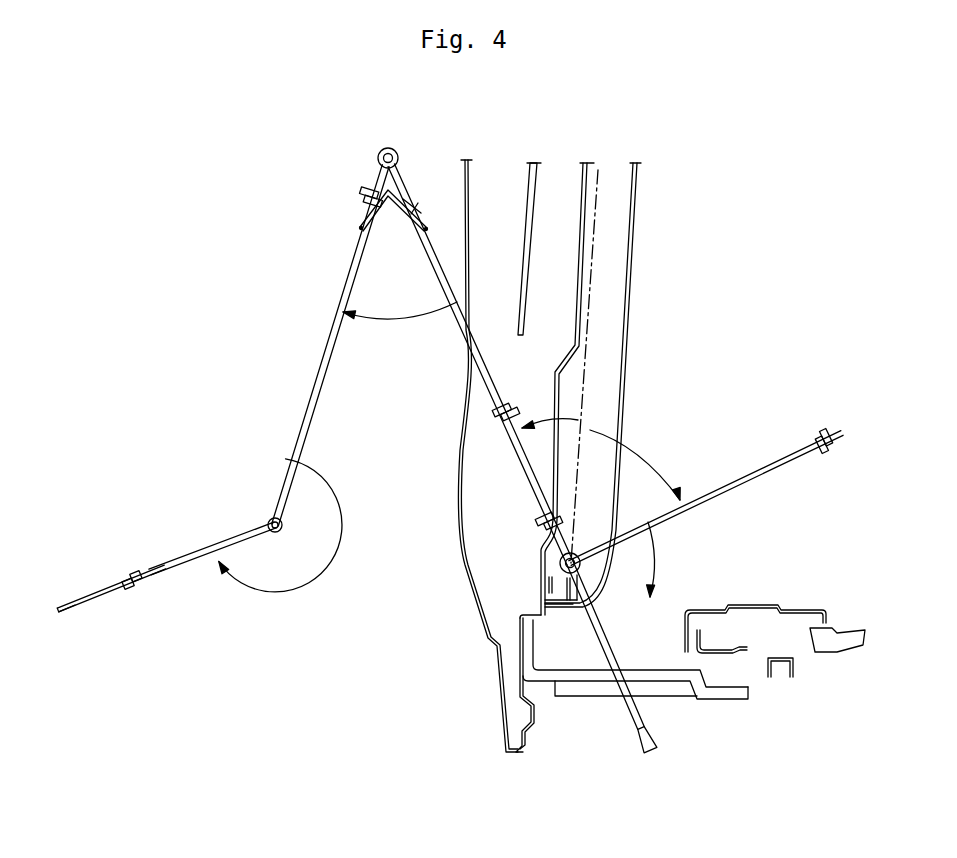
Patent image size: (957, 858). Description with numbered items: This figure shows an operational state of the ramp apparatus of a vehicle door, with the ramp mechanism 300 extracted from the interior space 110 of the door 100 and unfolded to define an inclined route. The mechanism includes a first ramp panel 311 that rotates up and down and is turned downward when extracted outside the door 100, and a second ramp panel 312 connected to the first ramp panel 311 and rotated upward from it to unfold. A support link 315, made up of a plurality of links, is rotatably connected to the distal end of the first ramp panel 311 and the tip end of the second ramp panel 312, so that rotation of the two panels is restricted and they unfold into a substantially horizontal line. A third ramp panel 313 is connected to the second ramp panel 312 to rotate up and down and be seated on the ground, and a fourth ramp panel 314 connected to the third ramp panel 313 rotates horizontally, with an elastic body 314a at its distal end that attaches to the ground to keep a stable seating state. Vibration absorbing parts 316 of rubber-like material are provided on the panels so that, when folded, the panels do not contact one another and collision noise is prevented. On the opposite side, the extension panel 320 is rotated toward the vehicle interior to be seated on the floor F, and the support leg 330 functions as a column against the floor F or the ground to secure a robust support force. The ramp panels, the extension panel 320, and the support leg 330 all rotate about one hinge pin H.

The door 100 is at (467, 208).
The interior space 110 is at (612, 299).
The ramp mechanism 300 is at (304, 286).
The first ramp panel 311 is at (518, 455).
The second ramp panel 312 is at (320, 373).
The third ramp panel 313 is at (191, 570).
The fourth ramp panel 314 is at (112, 588).
The elastic body 314a is at (78, 612).
The support link 315 is at (398, 193).
The vibration absorbing part 316 is at (365, 192).
The extension panel 320 is at (748, 470).
The support leg 330 is at (626, 710).
The floor F is at (762, 604).
The hinge pin H is at (557, 566).